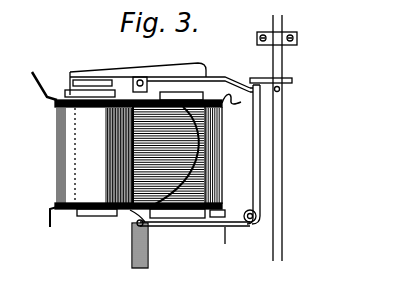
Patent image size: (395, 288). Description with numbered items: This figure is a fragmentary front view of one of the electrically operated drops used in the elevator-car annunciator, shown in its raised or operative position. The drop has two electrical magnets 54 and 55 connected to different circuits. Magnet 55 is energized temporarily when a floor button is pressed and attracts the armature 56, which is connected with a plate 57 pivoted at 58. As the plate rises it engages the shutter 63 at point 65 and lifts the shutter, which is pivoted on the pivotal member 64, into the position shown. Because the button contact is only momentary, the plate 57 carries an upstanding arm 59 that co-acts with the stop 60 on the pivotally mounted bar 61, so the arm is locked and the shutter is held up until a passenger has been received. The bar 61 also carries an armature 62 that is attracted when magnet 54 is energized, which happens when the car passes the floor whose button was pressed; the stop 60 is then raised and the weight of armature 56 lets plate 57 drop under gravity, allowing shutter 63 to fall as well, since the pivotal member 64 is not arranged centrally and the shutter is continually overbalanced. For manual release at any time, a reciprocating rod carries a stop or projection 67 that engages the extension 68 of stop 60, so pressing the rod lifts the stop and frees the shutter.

The electrical magnet 54 is at (85, 166).
The electrical magnet 55 is at (208, 163).
The armature 56 is at (193, 218).
The plate 57 is at (173, 227).
The pivot 58 is at (251, 223).
The upstanding arm 59 is at (260, 190).
The stop 60 is at (247, 75).
The pivotally mounted bar 61 is at (163, 77).
The armature 62 is at (92, 82).
The shutter 63 is at (128, 216).
The pivotal member 64 is at (133, 227).
The point of engagement 65 is at (137, 221).
The stop or projection 67 is at (280, 89).
The extension 68 is at (292, 80).